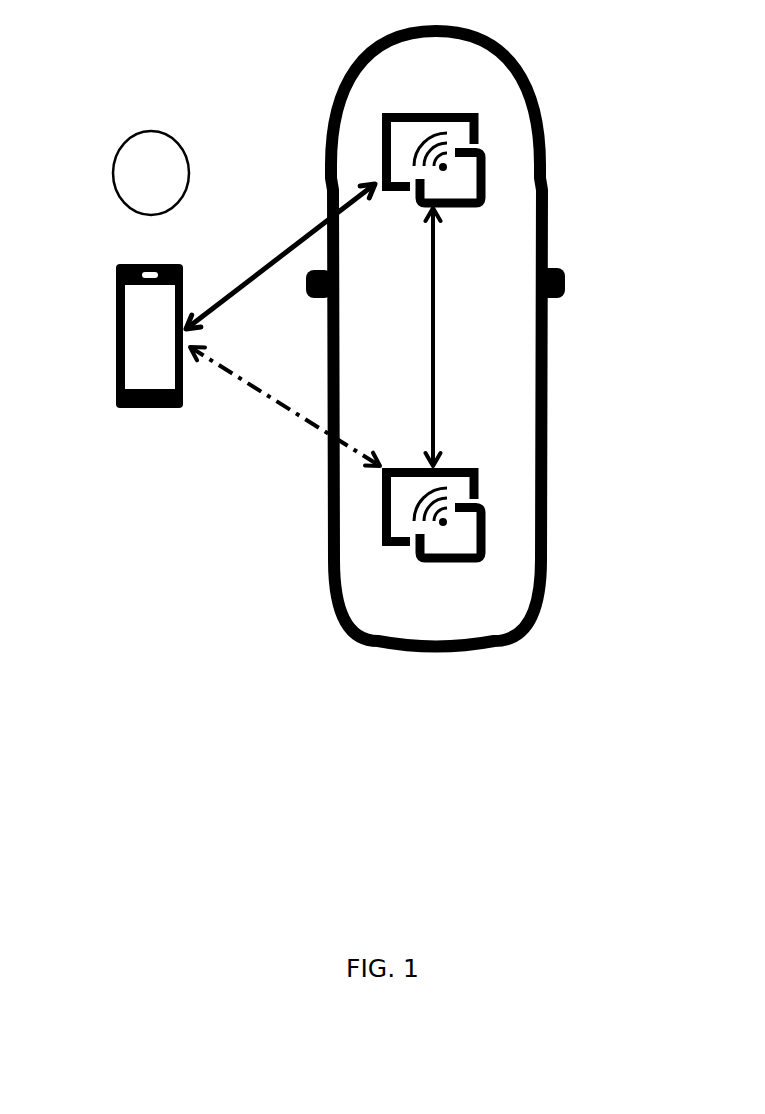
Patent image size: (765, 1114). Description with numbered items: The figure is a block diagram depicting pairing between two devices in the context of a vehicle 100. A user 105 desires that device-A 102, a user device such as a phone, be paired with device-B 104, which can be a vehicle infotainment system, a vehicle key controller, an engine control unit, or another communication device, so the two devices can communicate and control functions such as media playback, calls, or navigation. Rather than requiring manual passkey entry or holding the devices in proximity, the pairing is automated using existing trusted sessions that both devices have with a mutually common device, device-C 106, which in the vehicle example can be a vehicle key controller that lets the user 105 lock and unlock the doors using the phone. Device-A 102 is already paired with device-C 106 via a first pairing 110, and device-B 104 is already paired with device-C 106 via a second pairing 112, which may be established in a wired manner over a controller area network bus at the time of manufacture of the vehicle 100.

The vehicle 100 is at (547, 155).
The device-A 102 is at (113, 340).
The device-B 104 is at (478, 465).
The user 105 is at (110, 175).
The device-C 106 is at (475, 108).
The first pairing 110 is at (300, 240).
The second pairing 112 is at (435, 355).